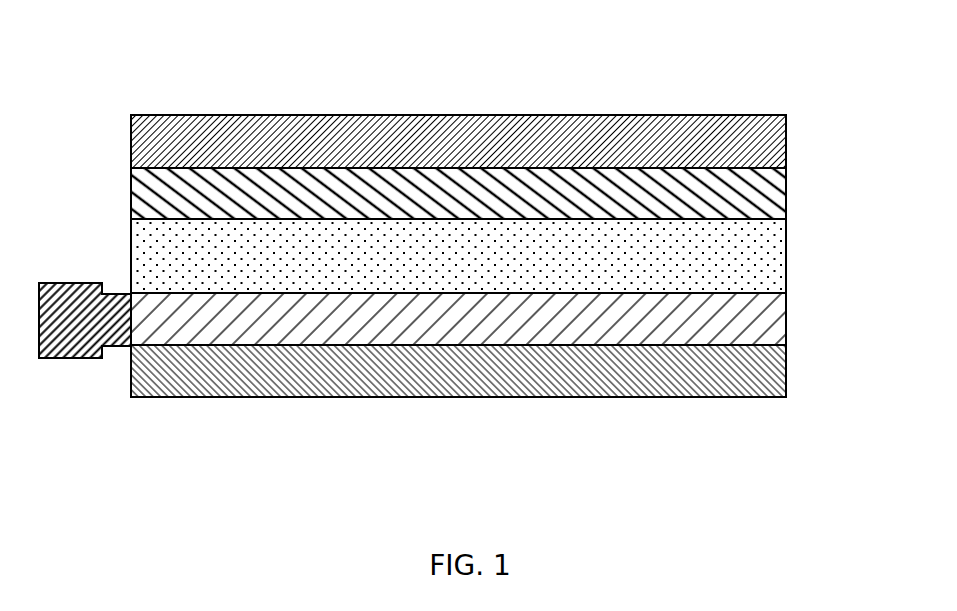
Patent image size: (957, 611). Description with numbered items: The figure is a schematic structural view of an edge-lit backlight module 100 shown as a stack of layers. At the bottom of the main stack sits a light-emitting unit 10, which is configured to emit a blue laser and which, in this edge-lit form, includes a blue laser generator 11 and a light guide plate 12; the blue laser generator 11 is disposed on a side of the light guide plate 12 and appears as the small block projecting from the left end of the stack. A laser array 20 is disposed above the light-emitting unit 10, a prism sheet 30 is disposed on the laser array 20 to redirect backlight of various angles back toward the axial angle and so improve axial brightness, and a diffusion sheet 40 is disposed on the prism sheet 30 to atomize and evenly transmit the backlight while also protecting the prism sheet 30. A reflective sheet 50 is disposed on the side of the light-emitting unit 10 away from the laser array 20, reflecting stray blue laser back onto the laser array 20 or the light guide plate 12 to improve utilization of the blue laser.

The backlight module 100 is at (745, 62).
The light-emitting unit 10 is at (412, 397).
The blue laser generator 11 is at (90, 325).
The light guide plate 12 is at (207, 322).
The laser array 20 is at (757, 272).
The prism sheet 30 is at (755, 205).
The diffusion sheet 40 is at (755, 148).
The reflective sheet 50 is at (757, 377).